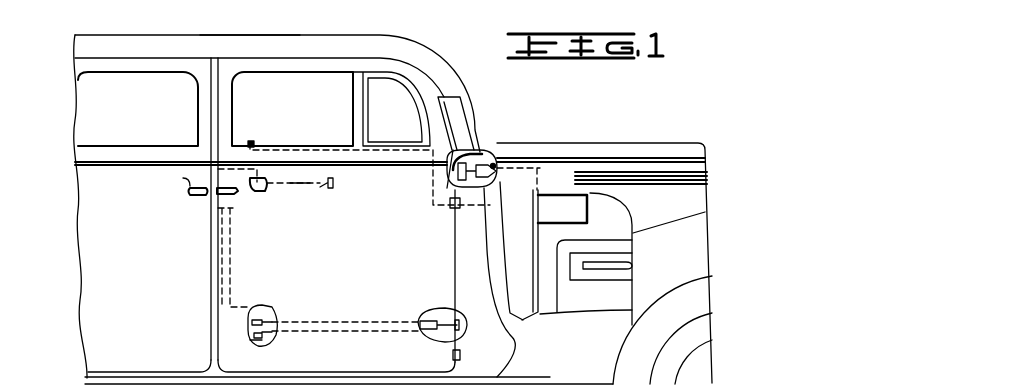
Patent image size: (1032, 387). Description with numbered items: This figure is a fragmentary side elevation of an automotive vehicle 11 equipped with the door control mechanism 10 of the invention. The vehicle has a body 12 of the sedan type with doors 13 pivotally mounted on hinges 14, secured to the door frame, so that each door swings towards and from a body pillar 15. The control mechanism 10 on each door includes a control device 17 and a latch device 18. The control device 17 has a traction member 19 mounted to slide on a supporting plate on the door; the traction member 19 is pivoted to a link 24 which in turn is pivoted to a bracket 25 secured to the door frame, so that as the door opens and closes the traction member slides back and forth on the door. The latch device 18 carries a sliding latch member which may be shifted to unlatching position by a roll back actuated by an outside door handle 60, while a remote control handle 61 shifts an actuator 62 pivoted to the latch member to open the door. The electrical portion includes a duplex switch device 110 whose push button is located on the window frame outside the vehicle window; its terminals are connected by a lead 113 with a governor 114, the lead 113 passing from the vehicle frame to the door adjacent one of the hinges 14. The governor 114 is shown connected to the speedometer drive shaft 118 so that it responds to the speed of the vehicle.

The door control mechanism 10 is at (268, 307).
The automotive vehicle 11 is at (438, 63).
The body 12 is at (212, 45).
The doors 13 is at (282, 65).
The hinges 14 is at (452, 208).
The body pillar 15 is at (212, 205).
The control device 17 is at (260, 343).
The latch device 18 is at (241, 205).
The traction member 19 is at (273, 335).
The link 24 is at (437, 321).
The bracket 25 is at (457, 316).
The outside door handle 60 is at (183, 178).
The remote control handle 61 is at (320, 187).
The actuator 62 is at (298, 197).
The duplex switch device 110 is at (251, 142).
The lead 113 is at (322, 148).
The governor 114 is at (481, 162).
The speedometer drive shaft 118 is at (495, 164).